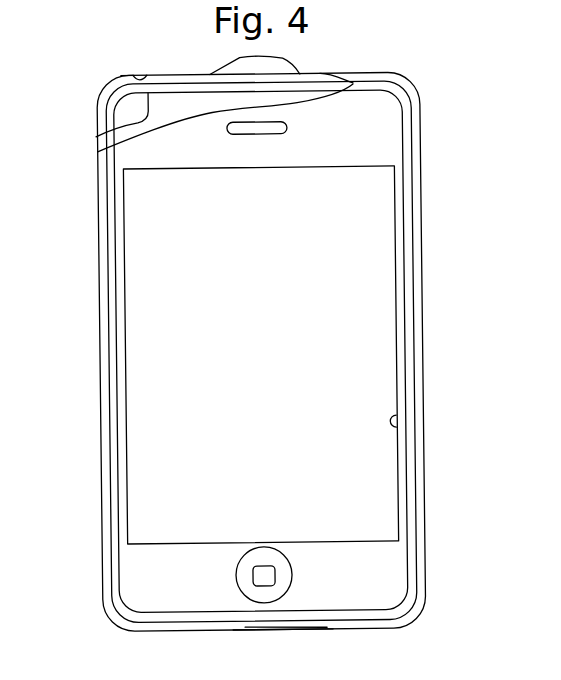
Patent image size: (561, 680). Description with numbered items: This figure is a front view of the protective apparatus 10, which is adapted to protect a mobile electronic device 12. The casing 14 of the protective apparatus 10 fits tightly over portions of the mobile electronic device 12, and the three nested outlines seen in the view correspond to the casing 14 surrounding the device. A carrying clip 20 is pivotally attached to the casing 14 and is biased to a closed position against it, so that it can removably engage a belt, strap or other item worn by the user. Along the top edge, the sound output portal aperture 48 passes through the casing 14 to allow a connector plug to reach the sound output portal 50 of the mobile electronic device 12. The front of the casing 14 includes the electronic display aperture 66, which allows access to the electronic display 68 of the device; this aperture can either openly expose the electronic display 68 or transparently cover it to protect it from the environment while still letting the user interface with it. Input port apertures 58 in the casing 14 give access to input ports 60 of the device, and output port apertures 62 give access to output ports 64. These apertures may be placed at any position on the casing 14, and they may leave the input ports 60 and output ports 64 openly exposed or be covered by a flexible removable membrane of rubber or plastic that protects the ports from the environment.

The protective apparatus 10 is at (418, 74).
The mobile electronic device 12 is at (366, 578).
The casing 14 is at (418, 104).
The carrying clip 20 is at (243, 57).
The sound output portal aperture 48 is at (145, 77).
The sound output portal 50 is at (136, 72).
The input port apertures 58 is at (100, 136).
The input ports 60 is at (358, 74).
The output port apertures 62 is at (110, 124).
The output ports 64 is at (244, 632).
The electronic display aperture 66 is at (399, 422).
The electronic display 68 is at (363, 355).